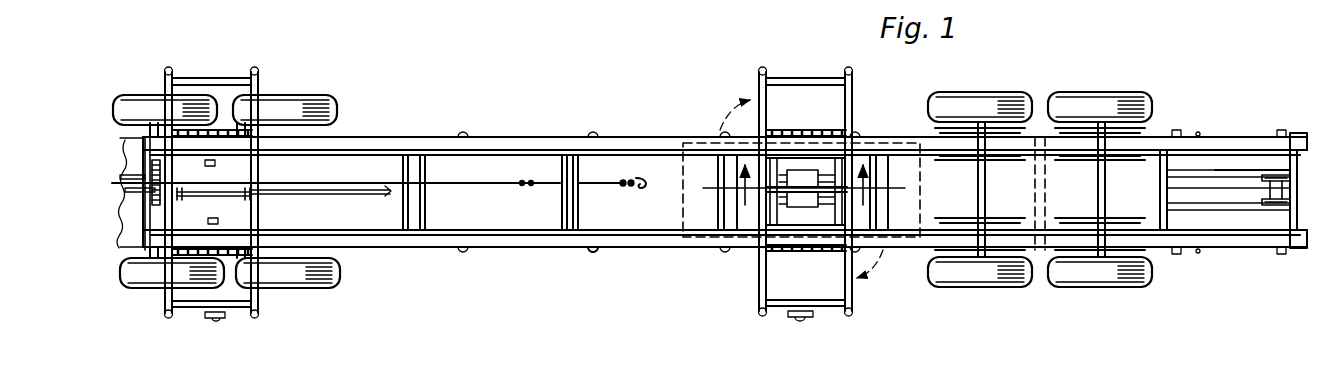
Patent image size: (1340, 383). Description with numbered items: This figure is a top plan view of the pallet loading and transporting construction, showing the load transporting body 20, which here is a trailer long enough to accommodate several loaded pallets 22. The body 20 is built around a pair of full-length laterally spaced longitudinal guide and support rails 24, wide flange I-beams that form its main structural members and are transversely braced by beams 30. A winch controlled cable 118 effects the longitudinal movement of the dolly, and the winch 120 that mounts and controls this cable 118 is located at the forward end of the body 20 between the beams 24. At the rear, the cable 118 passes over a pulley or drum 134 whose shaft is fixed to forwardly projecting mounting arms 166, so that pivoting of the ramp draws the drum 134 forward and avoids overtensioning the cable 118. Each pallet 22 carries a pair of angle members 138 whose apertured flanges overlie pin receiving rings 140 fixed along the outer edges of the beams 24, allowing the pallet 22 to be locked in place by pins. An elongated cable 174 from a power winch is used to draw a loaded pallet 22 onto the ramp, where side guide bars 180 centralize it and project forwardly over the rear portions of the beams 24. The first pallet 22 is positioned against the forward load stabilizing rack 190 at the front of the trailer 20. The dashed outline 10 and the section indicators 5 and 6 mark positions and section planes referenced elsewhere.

The dashed outline of frame positions 10 is at (864, 189).
The load transporting body 20 is at (524, 134).
The pallet 22 is at (268, 77).
The guide and support rails 24 is at (522, 251).
The beams 30 is at (576, 213).
The cable 118 is at (341, 193).
The winch 120 is at (178, 180).
The pulley or drum 134 is at (1290, 187).
The angle members 138 is at (822, 258).
The pin receiving rings 140 is at (593, 251).
The mounting arms 166 is at (1214, 204).
The cable 174 is at (479, 186).
The side guide bars 180 is at (1200, 128).
The forward load stabilizing rack 190 is at (160, 176).
The section line 5- 5 is at (1180, 218).
The section line 6- 6 is at (125, 48).